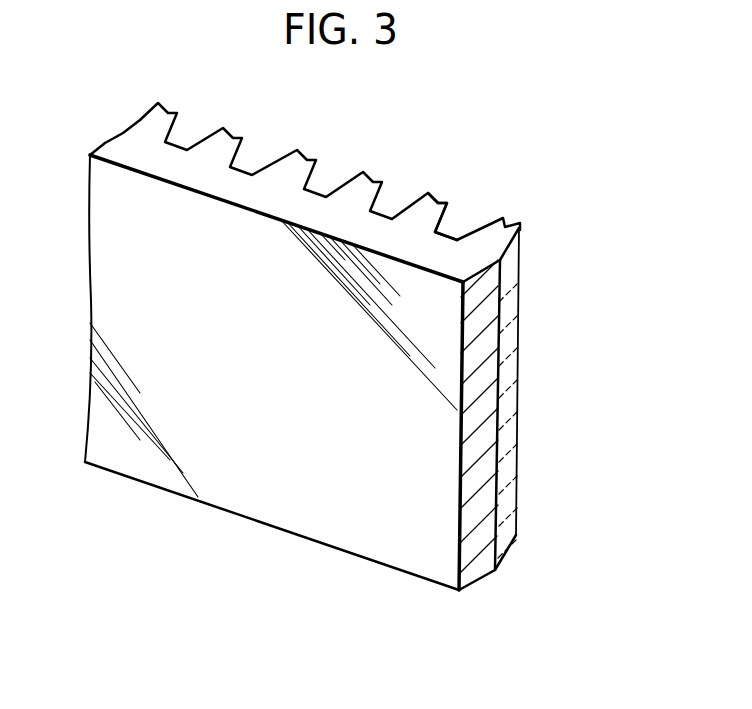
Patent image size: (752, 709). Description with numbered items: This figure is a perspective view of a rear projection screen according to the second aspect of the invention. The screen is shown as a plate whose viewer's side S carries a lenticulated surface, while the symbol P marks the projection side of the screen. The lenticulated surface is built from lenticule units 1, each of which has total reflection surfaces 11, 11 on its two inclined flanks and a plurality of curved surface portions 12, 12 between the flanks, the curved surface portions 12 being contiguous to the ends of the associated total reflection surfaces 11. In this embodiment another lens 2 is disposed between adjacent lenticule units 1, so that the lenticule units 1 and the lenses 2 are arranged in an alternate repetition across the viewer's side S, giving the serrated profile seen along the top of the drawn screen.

The projection side P is at (116, 273).
The viewer's side S is at (386, 160).
The lens 2 is at (460, 232).
The lenticule unit 1 is at (536, 358).
The total reflection surface 11 is at (483, 222).
The curved surface portion 12 is at (512, 223).